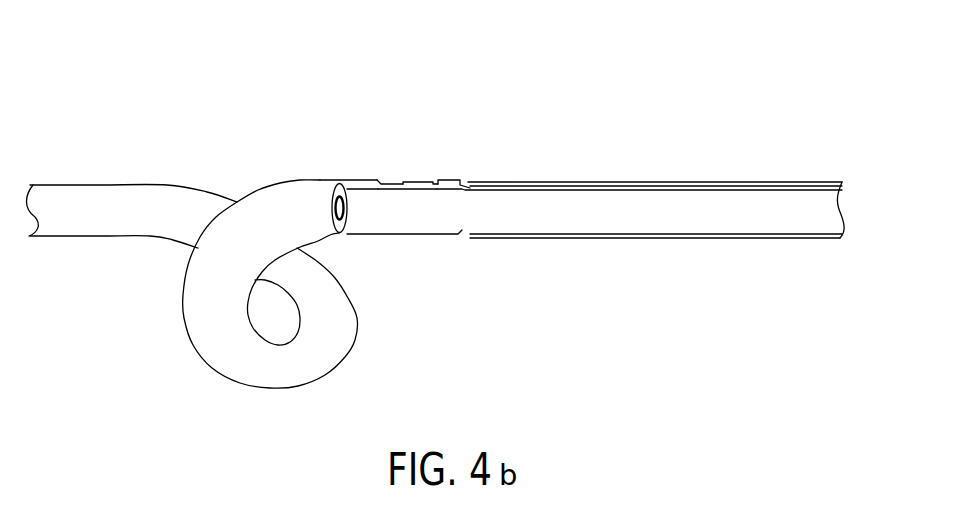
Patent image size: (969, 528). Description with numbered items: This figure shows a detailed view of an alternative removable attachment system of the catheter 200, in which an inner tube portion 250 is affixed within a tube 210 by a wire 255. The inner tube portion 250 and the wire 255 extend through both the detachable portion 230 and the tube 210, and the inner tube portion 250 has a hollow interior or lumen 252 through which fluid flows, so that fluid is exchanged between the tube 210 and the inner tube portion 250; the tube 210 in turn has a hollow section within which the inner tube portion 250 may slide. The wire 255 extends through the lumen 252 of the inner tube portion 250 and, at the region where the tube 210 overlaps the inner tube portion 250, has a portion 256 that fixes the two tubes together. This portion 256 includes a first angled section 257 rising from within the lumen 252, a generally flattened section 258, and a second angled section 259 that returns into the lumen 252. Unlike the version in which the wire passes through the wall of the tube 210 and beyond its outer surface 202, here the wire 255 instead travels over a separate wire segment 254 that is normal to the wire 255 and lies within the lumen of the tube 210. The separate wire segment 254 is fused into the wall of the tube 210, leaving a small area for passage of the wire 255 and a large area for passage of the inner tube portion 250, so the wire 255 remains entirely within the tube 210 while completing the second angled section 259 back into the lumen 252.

The catheter 200 is at (143, 121).
The outer surface 202 is at (310, 178).
The tube 210 is at (267, 246).
The detachable portion 230 is at (594, 182).
The inner tube portion 250 is at (570, 220).
The lumen 252 is at (449, 224).
The separate wire segment 254 is at (406, 182).
The wire 255 is at (789, 189).
The portion 256 is at (390, 142).
The first angled section 257 is at (437, 182).
The generally flattened section 258 is at (412, 182).
The second angled section 259 is at (378, 182).